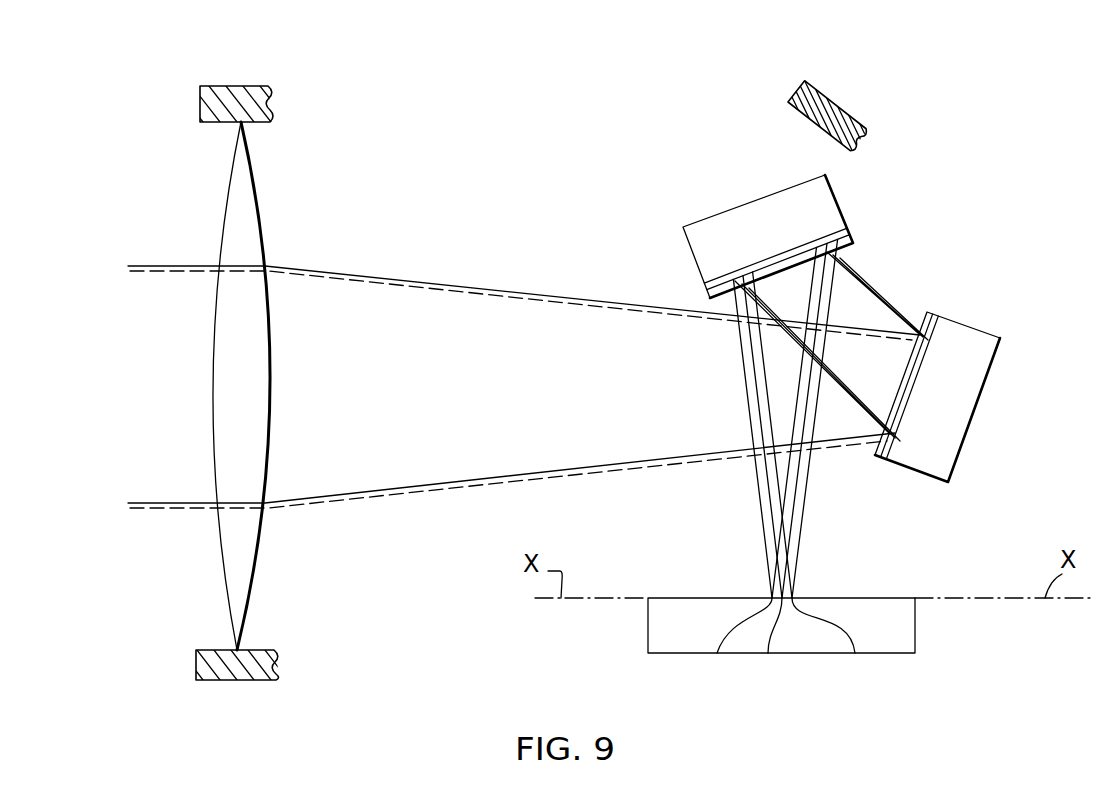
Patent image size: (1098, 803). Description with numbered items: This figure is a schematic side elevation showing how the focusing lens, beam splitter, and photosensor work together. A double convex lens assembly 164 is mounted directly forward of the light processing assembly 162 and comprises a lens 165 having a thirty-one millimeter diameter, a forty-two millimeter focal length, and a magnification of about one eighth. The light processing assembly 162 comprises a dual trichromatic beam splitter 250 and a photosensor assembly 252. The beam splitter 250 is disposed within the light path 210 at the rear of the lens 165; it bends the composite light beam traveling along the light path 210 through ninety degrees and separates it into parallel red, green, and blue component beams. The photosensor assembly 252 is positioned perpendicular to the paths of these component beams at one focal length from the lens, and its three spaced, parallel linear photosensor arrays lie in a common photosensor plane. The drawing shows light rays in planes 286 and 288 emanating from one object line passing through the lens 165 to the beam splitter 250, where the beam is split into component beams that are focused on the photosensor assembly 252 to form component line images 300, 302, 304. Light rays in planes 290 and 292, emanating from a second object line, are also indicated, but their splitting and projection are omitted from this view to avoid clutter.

The light processing assembly 162 is at (848, 100).
The double convex lens assembly 164 is at (268, 82).
The lens 165 is at (242, 208).
The light path 210 is at (166, 391).
The dual trichromatic beam splitter 250 is at (960, 318).
The photosensor assembly 252 is at (915, 621).
The plane of light rays 286 is at (293, 267).
The plane of light rays 288 is at (328, 493).
The plane of light rays 290 is at (342, 279).
The plane of light rays 292 is at (354, 497).
The component line image 300 is at (717, 653).
The component line image 302 is at (768, 653).
The component line image 304 is at (855, 653).